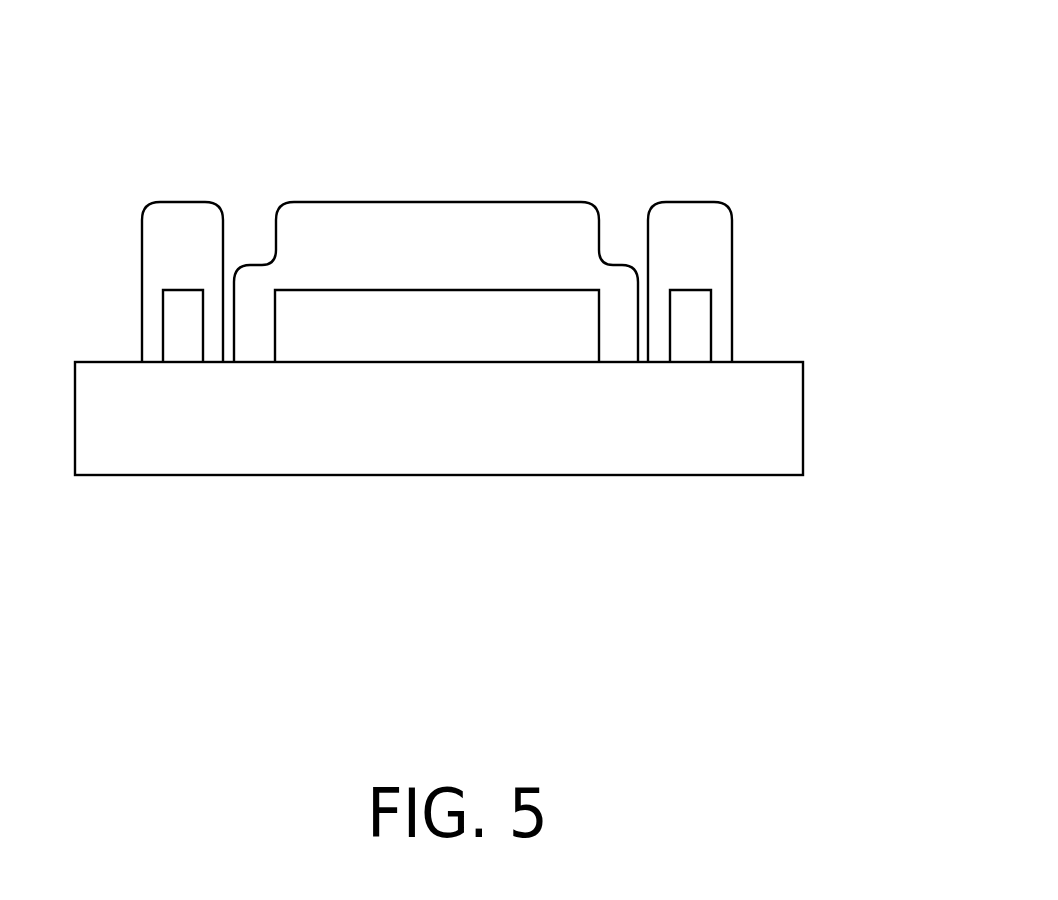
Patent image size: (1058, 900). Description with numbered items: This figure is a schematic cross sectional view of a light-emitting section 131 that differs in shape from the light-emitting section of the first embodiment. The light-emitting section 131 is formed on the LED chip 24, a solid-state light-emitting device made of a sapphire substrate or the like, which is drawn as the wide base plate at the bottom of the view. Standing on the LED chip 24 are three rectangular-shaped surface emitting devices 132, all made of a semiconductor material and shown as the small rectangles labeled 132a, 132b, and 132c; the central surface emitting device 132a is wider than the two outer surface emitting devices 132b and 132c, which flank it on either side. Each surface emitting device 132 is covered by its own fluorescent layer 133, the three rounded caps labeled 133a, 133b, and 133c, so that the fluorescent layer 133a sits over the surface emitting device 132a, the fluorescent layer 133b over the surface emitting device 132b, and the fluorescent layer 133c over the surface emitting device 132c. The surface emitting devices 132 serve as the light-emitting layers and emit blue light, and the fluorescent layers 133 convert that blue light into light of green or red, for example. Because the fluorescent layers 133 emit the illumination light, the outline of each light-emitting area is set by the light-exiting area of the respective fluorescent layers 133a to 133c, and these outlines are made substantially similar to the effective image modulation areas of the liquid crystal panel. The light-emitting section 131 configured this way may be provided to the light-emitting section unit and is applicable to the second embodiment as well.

The LED chip 24 is at (790, 424).
The light-emitting section 131 is at (482, 50).
The surface emitting devices 132 is at (608, 553).
The surface emitting device 132a is at (437, 343).
The surface emitting device 132b is at (695, 347).
The surface emitting device 132c is at (181, 345).
The fluorescent layers 133 is at (607, 110).
The fluorescent layer 133a is at (446, 216).
The fluorescent layer 133b is at (698, 216).
The fluorescent layer 133c is at (180, 218).